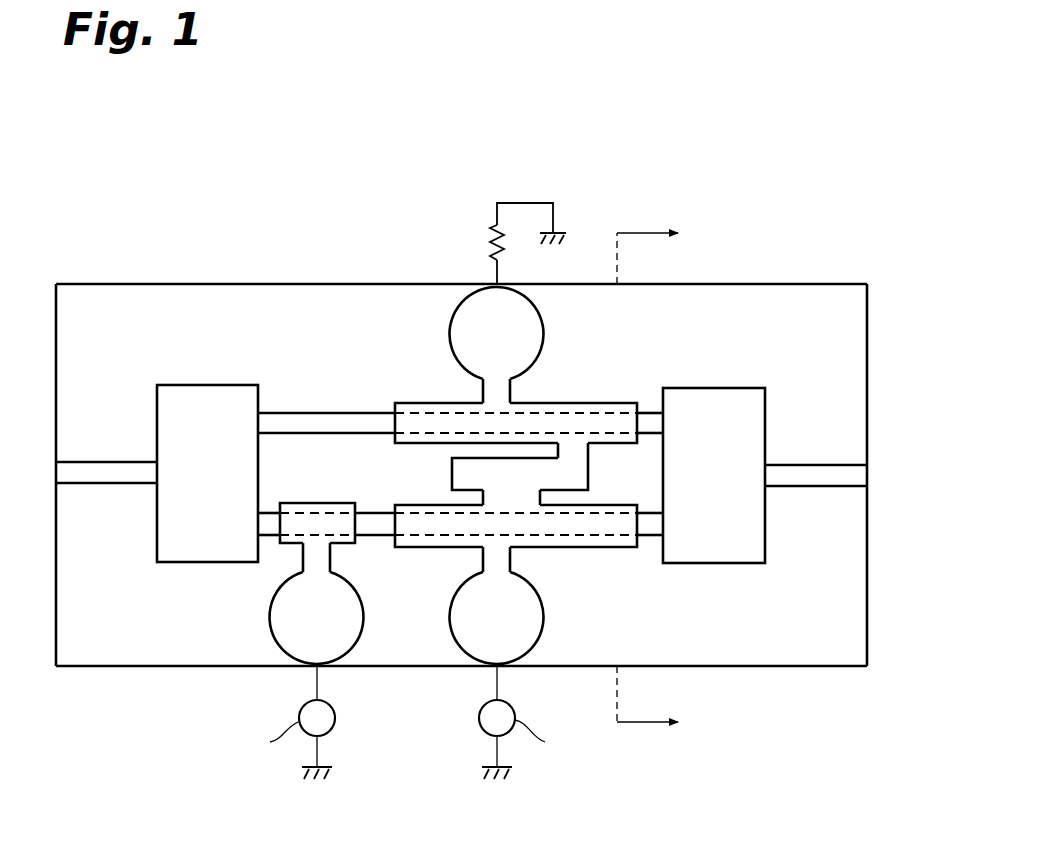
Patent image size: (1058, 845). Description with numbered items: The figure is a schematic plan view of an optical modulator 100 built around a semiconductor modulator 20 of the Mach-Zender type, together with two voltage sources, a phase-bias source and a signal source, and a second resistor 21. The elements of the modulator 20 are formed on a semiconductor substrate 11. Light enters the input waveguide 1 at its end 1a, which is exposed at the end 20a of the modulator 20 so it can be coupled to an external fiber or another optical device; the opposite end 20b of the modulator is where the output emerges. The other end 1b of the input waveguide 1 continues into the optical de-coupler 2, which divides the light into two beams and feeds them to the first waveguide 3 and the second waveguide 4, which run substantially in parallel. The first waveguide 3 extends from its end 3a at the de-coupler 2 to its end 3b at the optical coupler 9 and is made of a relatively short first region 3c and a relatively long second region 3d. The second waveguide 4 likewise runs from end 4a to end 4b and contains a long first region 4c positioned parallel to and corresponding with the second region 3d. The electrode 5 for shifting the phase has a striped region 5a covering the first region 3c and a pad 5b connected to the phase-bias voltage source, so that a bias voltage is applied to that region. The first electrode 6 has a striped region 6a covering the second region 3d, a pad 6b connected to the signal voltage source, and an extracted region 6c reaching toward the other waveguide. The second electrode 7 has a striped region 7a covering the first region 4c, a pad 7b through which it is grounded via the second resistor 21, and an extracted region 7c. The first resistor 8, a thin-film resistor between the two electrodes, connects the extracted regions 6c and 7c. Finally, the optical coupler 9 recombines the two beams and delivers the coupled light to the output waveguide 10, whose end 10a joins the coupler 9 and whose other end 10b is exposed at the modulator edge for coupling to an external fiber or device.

The optical modulator 100 is at (773, 135).
The input waveguide 1 is at (98, 484).
The end of input waveguide 1a is at (62, 458).
The other end of input waveguide 1b is at (150, 458).
The optical de-coupler 2 is at (200, 385).
The first waveguide 3 is at (372, 537).
The end of first waveguide 3a is at (262, 512).
The other end of first waveguide 3b is at (652, 512).
The first region of first waveguide 3c is at (330, 512).
The second region of first waveguide 3d is at (433, 538).
The second waveguide 4 is at (345, 413).
The end of second waveguide 4a is at (262, 413).
The other end of second waveguide 4b is at (655, 413).
The first region of second waveguide 4c is at (437, 415).
The electrode for shifting phase 5 is at (283, 656).
The striped region of electrode 5 5a is at (287, 541).
The pad of electrode 5 5b is at (285, 622).
The first electrode 6 is at (450, 626).
The striped region of first electrode 6a is at (580, 547).
The pad of first electrode 6b is at (527, 620).
The extracted region of first electrode 6c is at (452, 494).
The second electrode 7 is at (448, 300).
The striped region of second electrode 7a is at (405, 403).
The pad of second electrode 7b is at (525, 330).
The extracted region of second electrode 7c is at (568, 450).
The first resistor 8 is at (541, 492).
The optical coupler 9 is at (742, 563).
The output waveguide 10 is at (823, 488).
The end of output waveguide 10a is at (775, 465).
The other end of output waveguide 10b is at (855, 465).
The semiconductor substrate 11 is at (750, 306).
The semiconductor modulator 20 is at (822, 283).
The end of modulator 20a is at (56, 298).
The second end face of substrate 20b is at (867, 316).
The second resistor 21 is at (465, 220).